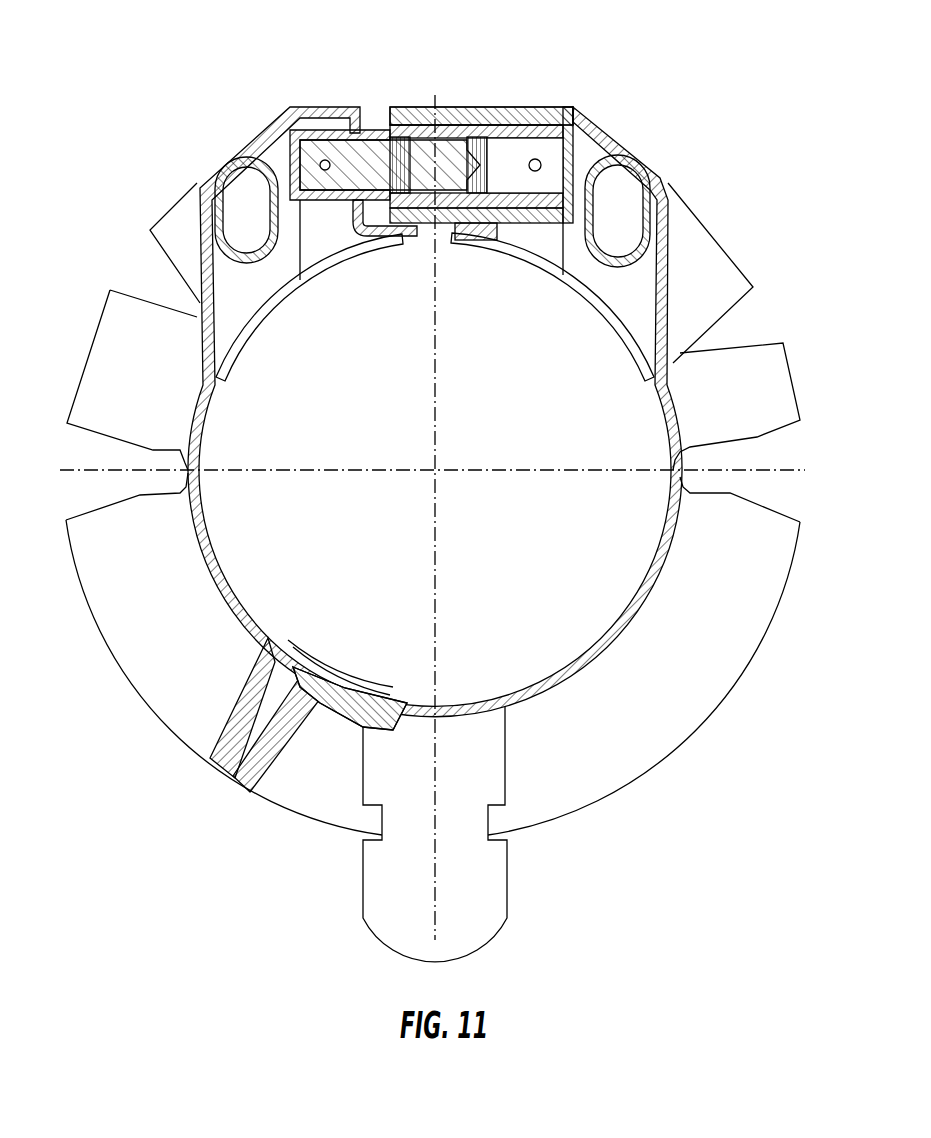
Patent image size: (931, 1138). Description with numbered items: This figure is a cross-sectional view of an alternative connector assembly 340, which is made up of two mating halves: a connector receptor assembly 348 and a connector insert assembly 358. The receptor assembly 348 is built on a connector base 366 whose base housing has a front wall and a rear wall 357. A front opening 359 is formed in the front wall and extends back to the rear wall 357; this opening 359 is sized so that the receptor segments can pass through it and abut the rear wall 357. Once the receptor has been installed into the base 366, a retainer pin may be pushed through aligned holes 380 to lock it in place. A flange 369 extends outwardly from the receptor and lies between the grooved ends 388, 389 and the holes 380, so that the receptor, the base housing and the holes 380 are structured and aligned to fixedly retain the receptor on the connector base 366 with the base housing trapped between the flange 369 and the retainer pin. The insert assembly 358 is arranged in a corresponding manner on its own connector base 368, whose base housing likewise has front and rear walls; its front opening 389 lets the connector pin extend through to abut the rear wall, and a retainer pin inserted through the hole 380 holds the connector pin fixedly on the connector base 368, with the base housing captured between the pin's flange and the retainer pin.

The connector assembly 340 is at (445, 78).
The connector receptor assembly 348 is at (543, 105).
The rear wall 357 is at (568, 147).
The connector insert assembly 358 is at (332, 107).
The front opening 359 is at (490, 105).
The connector base 366 is at (633, 307).
The connector base 368 is at (223, 300).
The flange 369 is at (497, 227).
The holes 380 is at (533, 172).
The grooved end 388 is at (422, 107).
The grooved end 389 is at (377, 135).